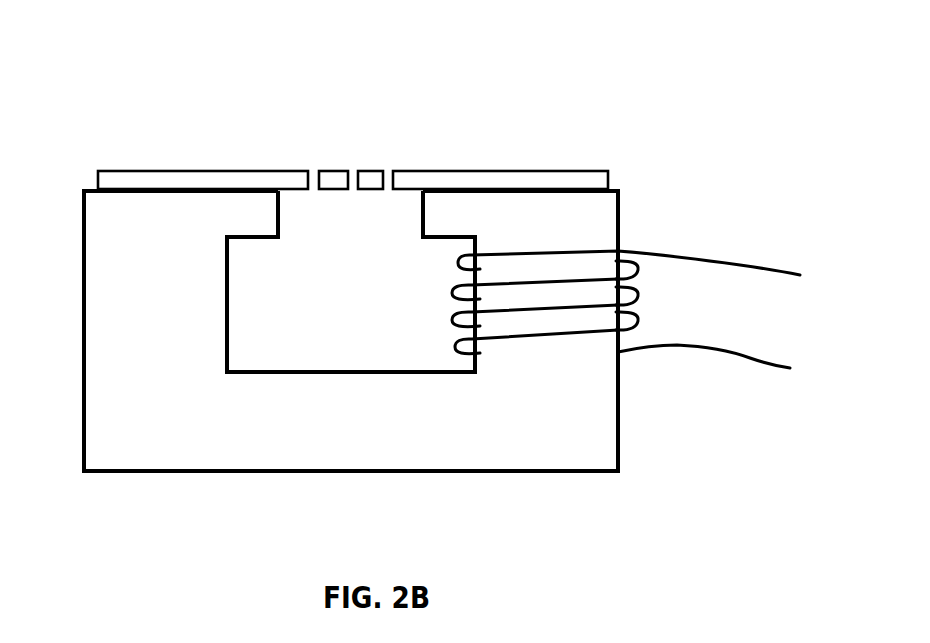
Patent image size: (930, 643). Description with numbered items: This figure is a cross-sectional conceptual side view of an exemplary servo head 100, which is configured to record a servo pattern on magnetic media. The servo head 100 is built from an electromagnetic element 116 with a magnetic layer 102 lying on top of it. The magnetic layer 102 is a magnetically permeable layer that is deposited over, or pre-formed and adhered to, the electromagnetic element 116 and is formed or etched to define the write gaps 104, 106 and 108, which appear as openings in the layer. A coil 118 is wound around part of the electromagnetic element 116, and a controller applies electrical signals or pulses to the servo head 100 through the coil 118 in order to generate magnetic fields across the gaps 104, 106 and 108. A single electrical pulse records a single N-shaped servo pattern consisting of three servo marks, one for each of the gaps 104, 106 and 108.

The servo head 100 is at (712, 457).
The magnetic layer 102 is at (175, 170).
The write gap 104 is at (313, 167).
The write gap 106 is at (352, 167).
The write gap 108 is at (390, 167).
The electromagnetic element 116 is at (360, 406).
The coil 118 is at (640, 282).